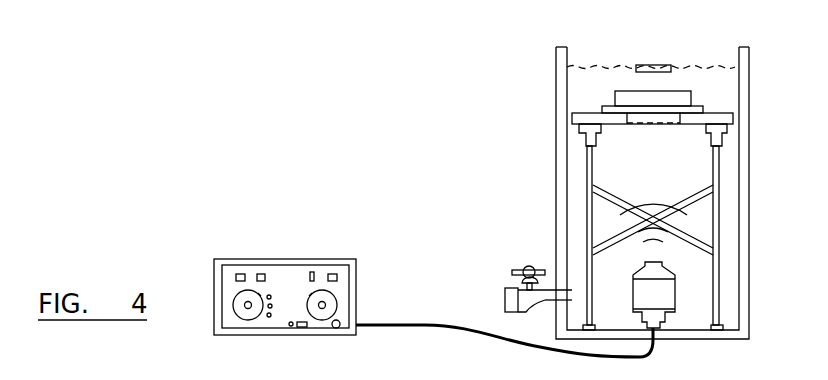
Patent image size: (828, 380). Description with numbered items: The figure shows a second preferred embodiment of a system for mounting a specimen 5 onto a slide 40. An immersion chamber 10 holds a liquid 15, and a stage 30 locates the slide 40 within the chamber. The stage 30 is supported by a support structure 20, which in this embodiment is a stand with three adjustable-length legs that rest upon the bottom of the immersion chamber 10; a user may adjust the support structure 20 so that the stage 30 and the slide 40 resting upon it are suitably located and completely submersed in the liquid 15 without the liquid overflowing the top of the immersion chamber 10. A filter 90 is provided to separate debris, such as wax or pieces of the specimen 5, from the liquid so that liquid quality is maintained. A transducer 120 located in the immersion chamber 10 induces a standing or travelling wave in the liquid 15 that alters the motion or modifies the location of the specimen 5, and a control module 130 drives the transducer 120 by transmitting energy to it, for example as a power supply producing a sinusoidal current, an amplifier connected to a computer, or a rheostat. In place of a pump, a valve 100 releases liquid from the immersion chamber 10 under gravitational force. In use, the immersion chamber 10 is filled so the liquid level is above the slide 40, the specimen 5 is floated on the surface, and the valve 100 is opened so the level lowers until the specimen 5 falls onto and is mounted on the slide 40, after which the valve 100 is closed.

The specimen 5 is at (648, 63).
The immersion chamber 10 is at (745, 280).
The liquid 15 is at (602, 90).
The support structure 20 is at (717, 227).
The stage 30 is at (727, 118).
The slide 40 is at (663, 98).
The filter 90 is at (695, 108).
The valve 100 is at (507, 292).
The transducer 120 is at (657, 290).
The control module 130 is at (282, 275).